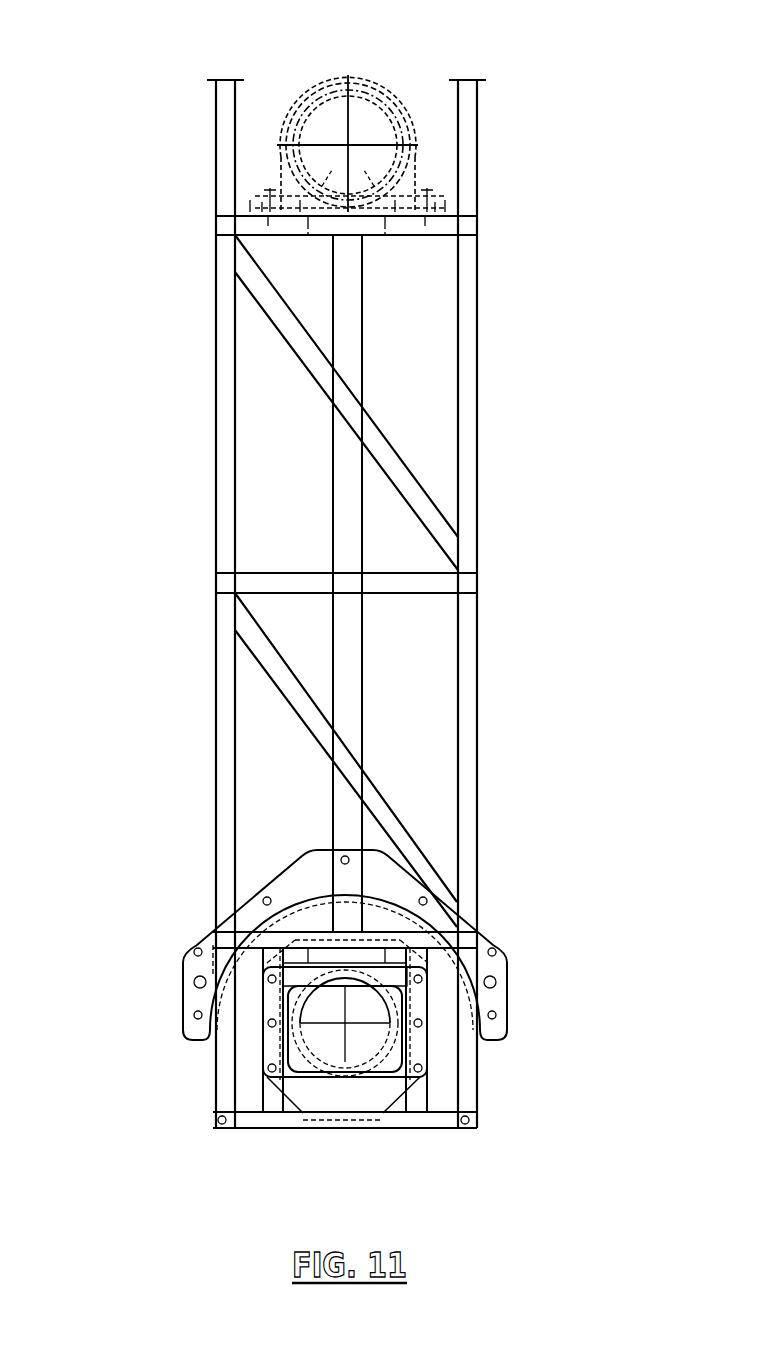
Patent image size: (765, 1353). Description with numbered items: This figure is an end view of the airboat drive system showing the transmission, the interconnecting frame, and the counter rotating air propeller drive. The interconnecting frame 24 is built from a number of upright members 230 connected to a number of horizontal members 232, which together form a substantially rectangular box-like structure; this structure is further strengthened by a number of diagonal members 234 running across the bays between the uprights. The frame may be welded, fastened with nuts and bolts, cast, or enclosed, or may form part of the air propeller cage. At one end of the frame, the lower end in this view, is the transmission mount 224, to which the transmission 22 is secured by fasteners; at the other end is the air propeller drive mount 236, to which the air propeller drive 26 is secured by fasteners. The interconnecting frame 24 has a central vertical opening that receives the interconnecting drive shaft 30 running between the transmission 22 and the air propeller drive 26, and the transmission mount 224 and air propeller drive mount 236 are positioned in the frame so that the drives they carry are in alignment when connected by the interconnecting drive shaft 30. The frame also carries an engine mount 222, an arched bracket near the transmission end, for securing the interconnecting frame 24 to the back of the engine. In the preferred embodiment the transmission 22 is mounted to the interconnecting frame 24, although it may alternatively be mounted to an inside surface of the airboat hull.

The transmission 22 is at (431, 1032).
The interconnecting frame 24 is at (351, 636).
The air propeller drive 26 is at (384, 92).
The interconnecting drive shaft 30 is at (362, 708).
The engine mount 222 is at (503, 952).
The transmission mount 224 is at (423, 1038).
The upright members 230 is at (477, 355).
The horizontal members 232 is at (471, 230).
The diagonal members 234 is at (275, 325).
The air propeller drive mount 236 is at (438, 194).